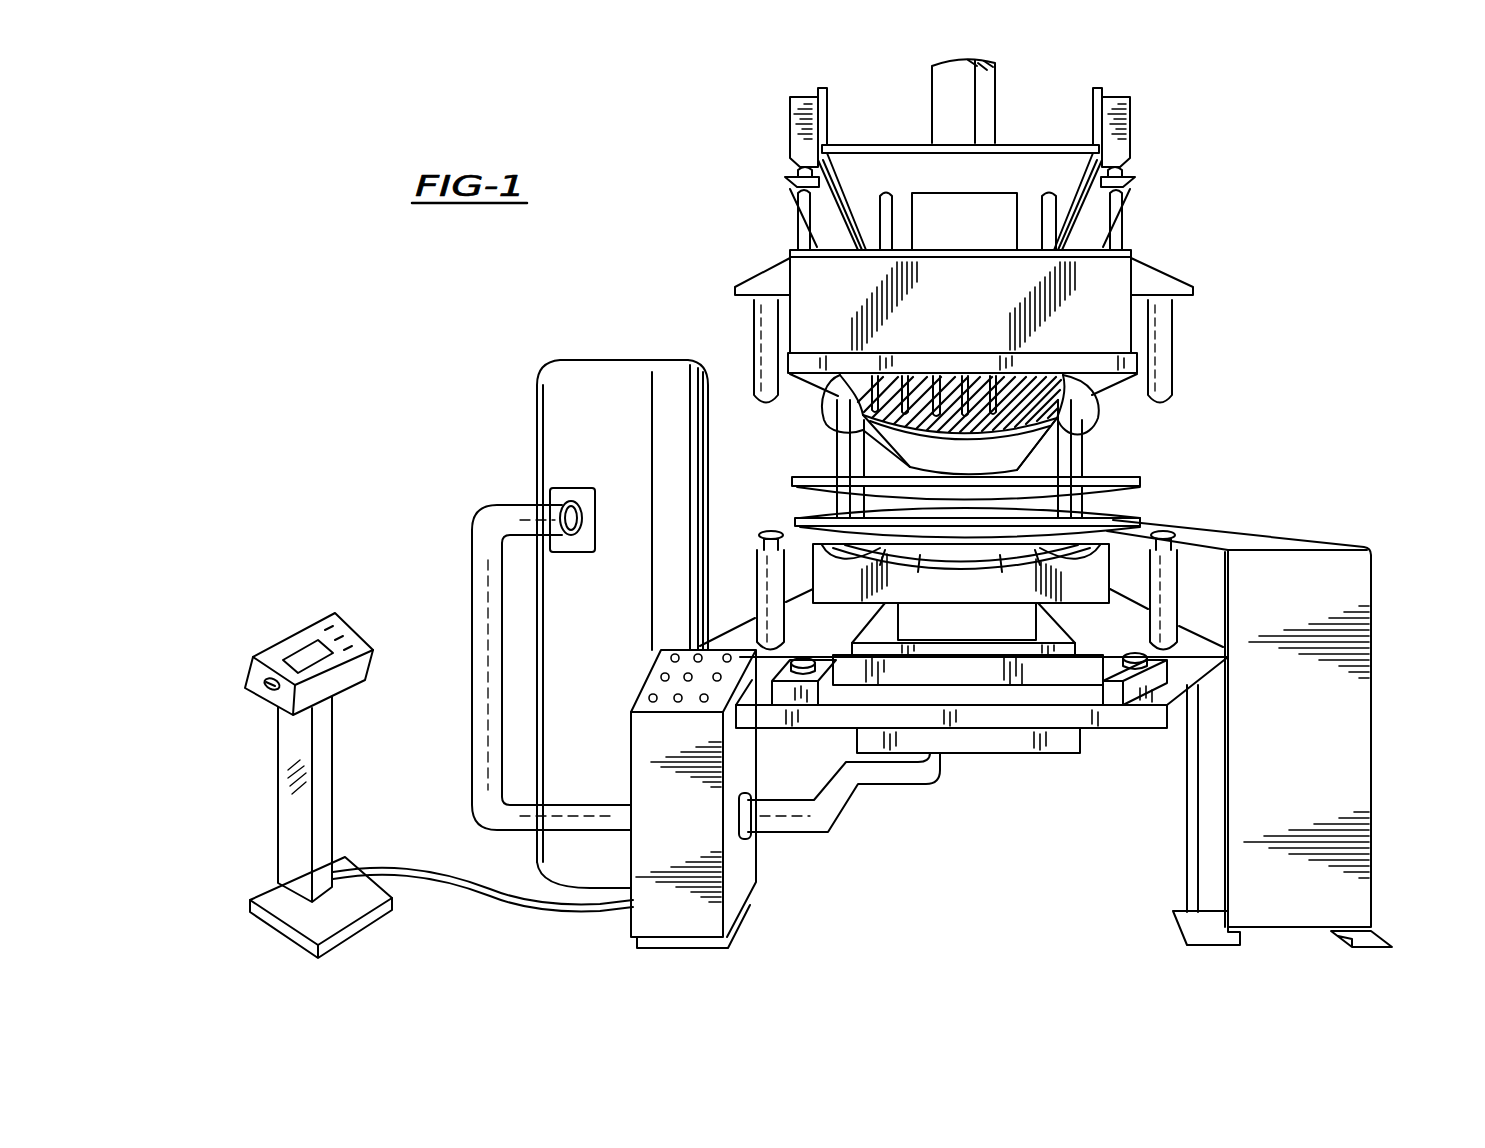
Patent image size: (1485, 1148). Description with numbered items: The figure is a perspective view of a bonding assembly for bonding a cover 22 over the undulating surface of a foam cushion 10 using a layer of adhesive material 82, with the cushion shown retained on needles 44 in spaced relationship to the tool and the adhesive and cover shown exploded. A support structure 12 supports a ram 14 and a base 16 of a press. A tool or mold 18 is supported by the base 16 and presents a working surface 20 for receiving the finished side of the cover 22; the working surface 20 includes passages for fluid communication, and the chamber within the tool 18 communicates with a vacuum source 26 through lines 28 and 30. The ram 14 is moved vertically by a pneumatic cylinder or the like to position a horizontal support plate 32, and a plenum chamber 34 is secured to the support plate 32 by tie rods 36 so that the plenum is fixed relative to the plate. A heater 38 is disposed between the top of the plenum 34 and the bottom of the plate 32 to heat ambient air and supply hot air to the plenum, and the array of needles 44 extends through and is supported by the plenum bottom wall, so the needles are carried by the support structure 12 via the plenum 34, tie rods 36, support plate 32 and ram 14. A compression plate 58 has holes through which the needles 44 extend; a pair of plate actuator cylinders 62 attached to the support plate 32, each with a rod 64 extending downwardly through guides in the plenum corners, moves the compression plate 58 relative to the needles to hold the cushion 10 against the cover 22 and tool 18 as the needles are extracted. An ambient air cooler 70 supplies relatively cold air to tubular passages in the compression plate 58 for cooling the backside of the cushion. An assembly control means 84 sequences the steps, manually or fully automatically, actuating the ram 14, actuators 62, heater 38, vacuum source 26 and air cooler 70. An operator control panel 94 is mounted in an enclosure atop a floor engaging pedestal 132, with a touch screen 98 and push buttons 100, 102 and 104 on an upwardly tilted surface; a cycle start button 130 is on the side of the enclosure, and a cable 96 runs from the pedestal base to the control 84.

The foam cushion 10 is at (1100, 435).
The support structure 12 is at (843, 498).
The ram 14 is at (990, 112).
The base 16 is at (1210, 675).
The tool or mold 18 is at (822, 573).
The working surface 20 is at (1003, 548).
The cover 22 is at (1145, 522).
The vacuum source 26 is at (598, 383).
The line 28 is at (475, 560).
The line 30 is at (843, 803).
The support plate 32 is at (852, 145).
The plenum chamber 34 is at (1085, 268).
The tie rods 36 is at (888, 210).
The heater 38 is at (925, 207).
The needles 44 is at (986, 376).
The compression plate 58 is at (1172, 362).
The plate actuator cylinders 62 is at (790, 125).
The rod 64 is at (800, 210).
The ambient air cooler 70 is at (1335, 738).
The layer of adhesive material 82 is at (1140, 478).
The assembly control means 84 is at (715, 905).
The operator control panel 94 is at (262, 652).
The cable 96 is at (455, 875).
The touch screen 98 is at (298, 660).
The push button 100 is at (330, 627).
The push button 102 is at (342, 638).
The push button 104 is at (354, 650).
The cycle start button 130 is at (267, 691).
The floor engaging pedestal 132 is at (288, 857).